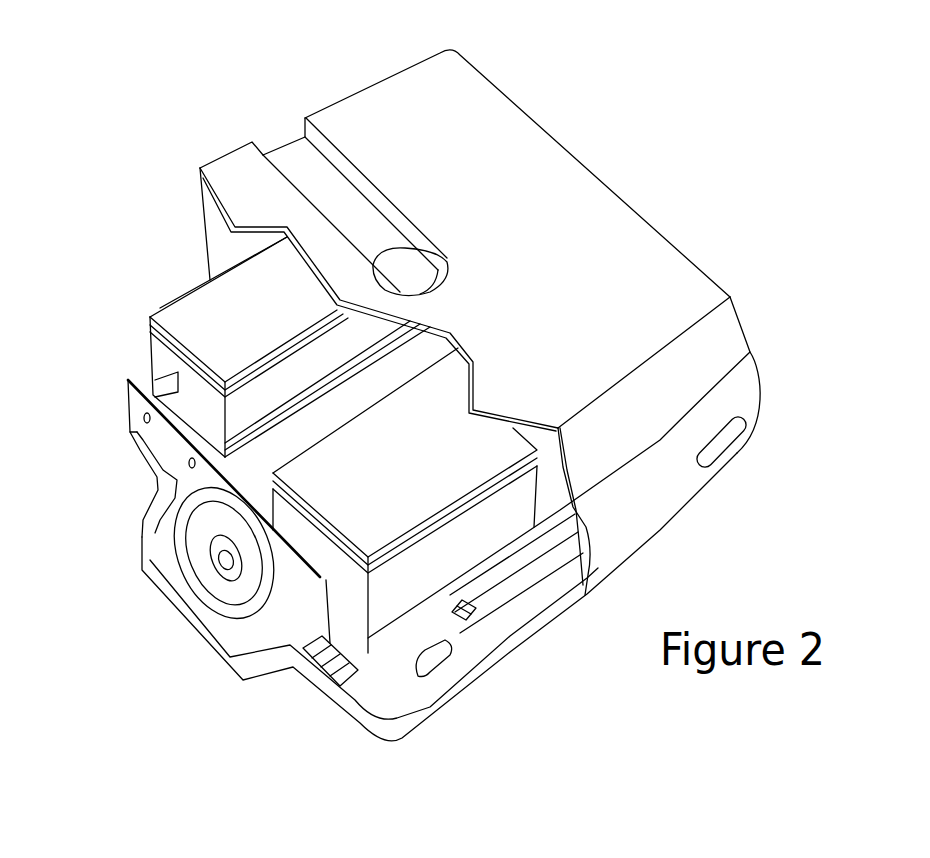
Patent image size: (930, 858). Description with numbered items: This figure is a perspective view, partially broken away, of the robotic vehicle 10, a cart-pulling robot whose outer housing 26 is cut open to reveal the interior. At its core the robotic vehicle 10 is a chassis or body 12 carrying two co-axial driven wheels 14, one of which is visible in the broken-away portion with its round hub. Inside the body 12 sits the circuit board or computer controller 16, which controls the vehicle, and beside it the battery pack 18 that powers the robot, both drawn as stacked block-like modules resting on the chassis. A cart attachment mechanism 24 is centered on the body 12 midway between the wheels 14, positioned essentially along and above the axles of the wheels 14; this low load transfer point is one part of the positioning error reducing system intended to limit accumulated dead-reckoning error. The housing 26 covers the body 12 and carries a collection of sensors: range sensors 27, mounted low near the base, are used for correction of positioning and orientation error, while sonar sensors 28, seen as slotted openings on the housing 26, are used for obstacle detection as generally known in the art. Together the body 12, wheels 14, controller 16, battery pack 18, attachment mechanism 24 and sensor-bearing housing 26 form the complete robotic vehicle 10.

The robotic vehicle 10 is at (645, 187).
The body 12 is at (255, 468).
The driven wheels 14 is at (253, 622).
The circuit board 16 is at (384, 479).
The battery pack 18 is at (274, 322).
The cart attachment mechanism 24 is at (412, 262).
The housing 26 is at (585, 301).
The range sensors 27 is at (340, 682).
The sonar sensors 28 is at (715, 450).